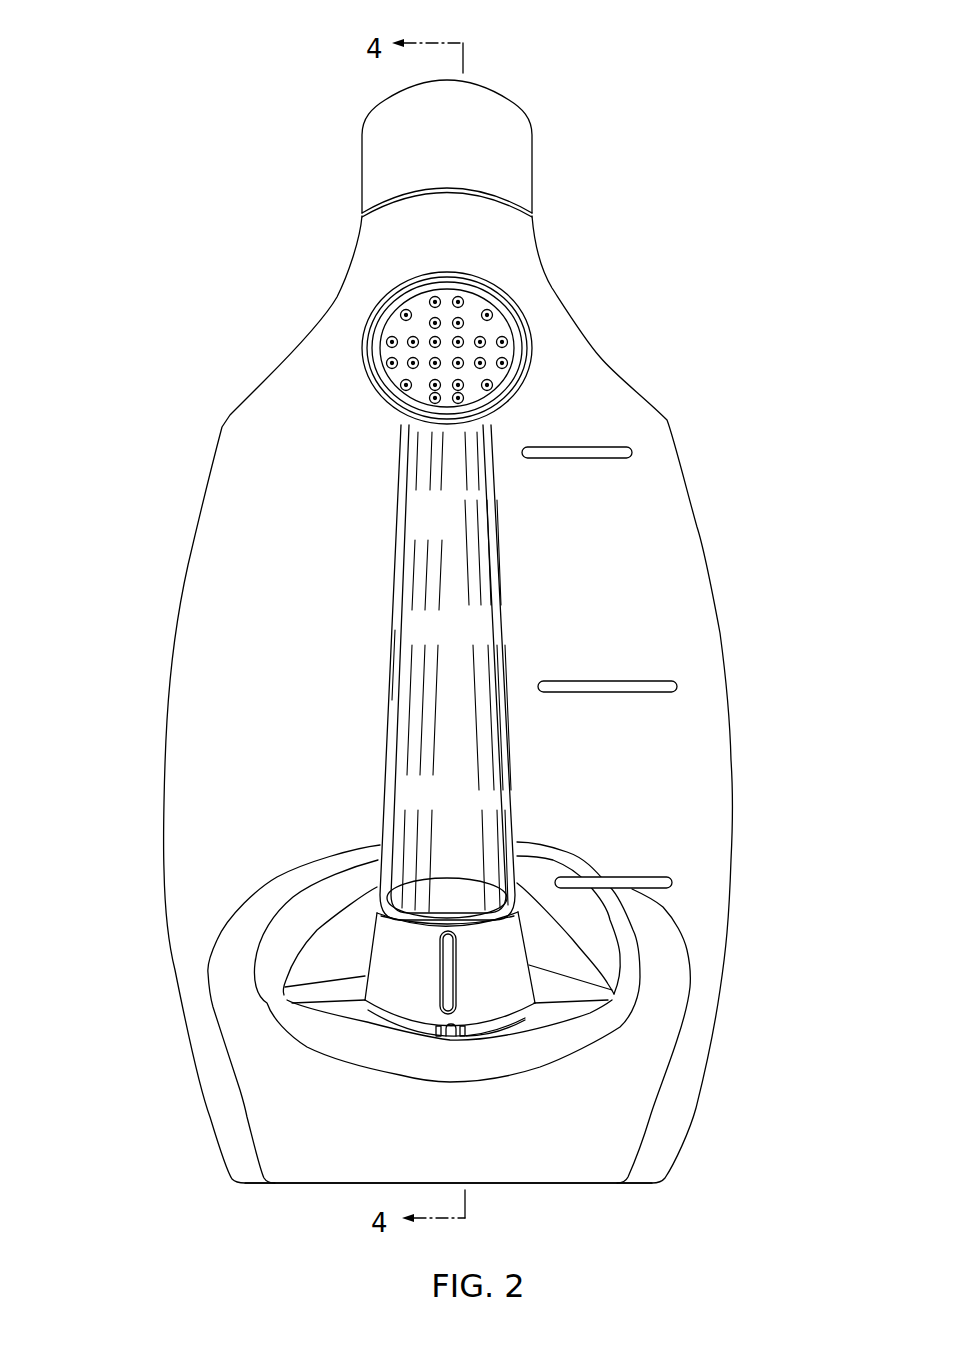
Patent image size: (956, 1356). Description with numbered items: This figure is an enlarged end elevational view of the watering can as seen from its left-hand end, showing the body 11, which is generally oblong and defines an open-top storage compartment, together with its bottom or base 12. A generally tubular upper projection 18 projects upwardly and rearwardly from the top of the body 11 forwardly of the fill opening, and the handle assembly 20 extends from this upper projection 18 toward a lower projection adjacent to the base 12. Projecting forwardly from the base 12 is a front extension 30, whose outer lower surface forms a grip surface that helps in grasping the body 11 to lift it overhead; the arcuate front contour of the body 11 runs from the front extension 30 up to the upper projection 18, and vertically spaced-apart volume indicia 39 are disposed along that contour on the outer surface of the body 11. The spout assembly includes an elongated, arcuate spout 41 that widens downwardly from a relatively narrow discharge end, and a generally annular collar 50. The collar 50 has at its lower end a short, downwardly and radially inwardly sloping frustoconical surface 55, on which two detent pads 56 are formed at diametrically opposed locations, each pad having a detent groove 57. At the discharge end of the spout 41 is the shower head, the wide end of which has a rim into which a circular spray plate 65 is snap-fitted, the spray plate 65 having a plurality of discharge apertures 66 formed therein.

The body 11 is at (165, 718).
The bottom or base 12 is at (352, 1185).
The upper projection 18 is at (360, 307).
The handle assembly 20 is at (350, 160).
The front extension 30 is at (566, 1167).
The volume indicia 39 is at (669, 633).
The spout 41 is at (391, 673).
The collar 50 is at (368, 1021).
The frustoconical surface 55 is at (428, 1032).
The detent pads 56 is at (485, 1034).
The detent groove 57 is at (466, 1037).
The spray plate 65 is at (432, 398).
The discharge apertures 66 is at (478, 325).